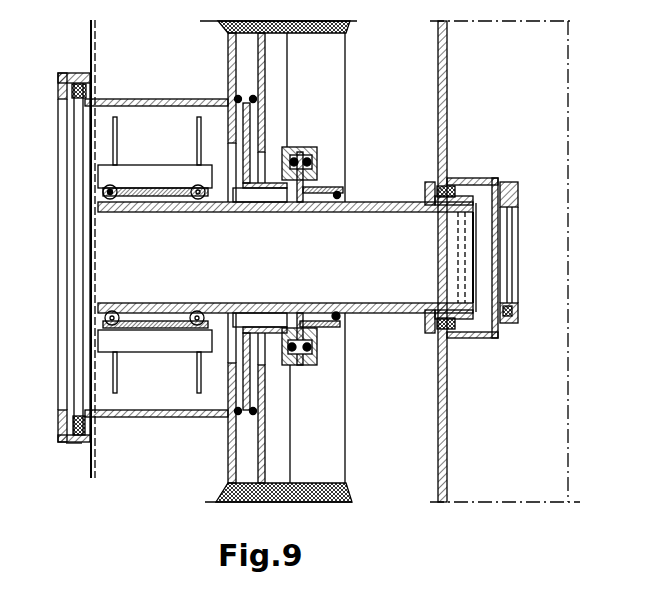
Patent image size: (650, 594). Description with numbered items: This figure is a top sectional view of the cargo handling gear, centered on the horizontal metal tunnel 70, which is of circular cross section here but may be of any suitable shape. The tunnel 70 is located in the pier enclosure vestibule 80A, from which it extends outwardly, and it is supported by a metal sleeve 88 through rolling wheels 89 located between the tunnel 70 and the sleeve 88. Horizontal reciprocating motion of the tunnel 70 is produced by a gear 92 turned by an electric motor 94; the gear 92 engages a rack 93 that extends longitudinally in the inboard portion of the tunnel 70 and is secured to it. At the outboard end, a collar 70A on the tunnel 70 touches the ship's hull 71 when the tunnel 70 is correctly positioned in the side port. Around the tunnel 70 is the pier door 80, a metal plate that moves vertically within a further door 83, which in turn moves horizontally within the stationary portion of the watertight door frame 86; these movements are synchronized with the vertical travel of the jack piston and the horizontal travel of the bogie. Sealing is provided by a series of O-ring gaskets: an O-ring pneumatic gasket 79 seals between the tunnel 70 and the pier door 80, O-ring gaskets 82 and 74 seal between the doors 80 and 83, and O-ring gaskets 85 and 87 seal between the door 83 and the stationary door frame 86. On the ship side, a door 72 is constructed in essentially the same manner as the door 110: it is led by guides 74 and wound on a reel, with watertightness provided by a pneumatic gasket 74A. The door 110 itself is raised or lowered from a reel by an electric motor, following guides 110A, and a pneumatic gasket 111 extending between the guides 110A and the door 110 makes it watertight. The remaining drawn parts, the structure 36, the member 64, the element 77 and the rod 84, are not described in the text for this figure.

The wall 36 is at (436, 440).
The inner member 64 is at (458, 262).
The horizontal metal tunnel 70 is at (310, 261).
The collar 70A is at (428, 330).
The ship's hull 71 is at (447, 428).
The door 72 is at (506, 268).
The guides 74 is at (516, 312).
The pneumatic gasket 74A is at (516, 323).
The bearing 77 is at (458, 190).
The O-ring pneumatic gasket 79 is at (341, 317).
The pier door 80 is at (343, 190).
The pier enclosure vestibule 80A is at (160, 97).
The O-ring gasket 82 is at (314, 357).
The door 83 is at (306, 150).
The rod 84 is at (298, 365).
The O-ring gasket 85 is at (262, 414).
The watertight door frame 86 is at (228, 72).
The O-ring gasket 87 is at (236, 98).
The metal sleeve 88 is at (178, 186).
The rolling wheels 89 is at (202, 186).
The gear 92 is at (112, 188).
The rack 93 is at (163, 192).
The electric motor 94 is at (102, 180).
The door 110 is at (66, 352).
The guides 110A is at (64, 430).
The pneumatic gasket 111 is at (68, 444).